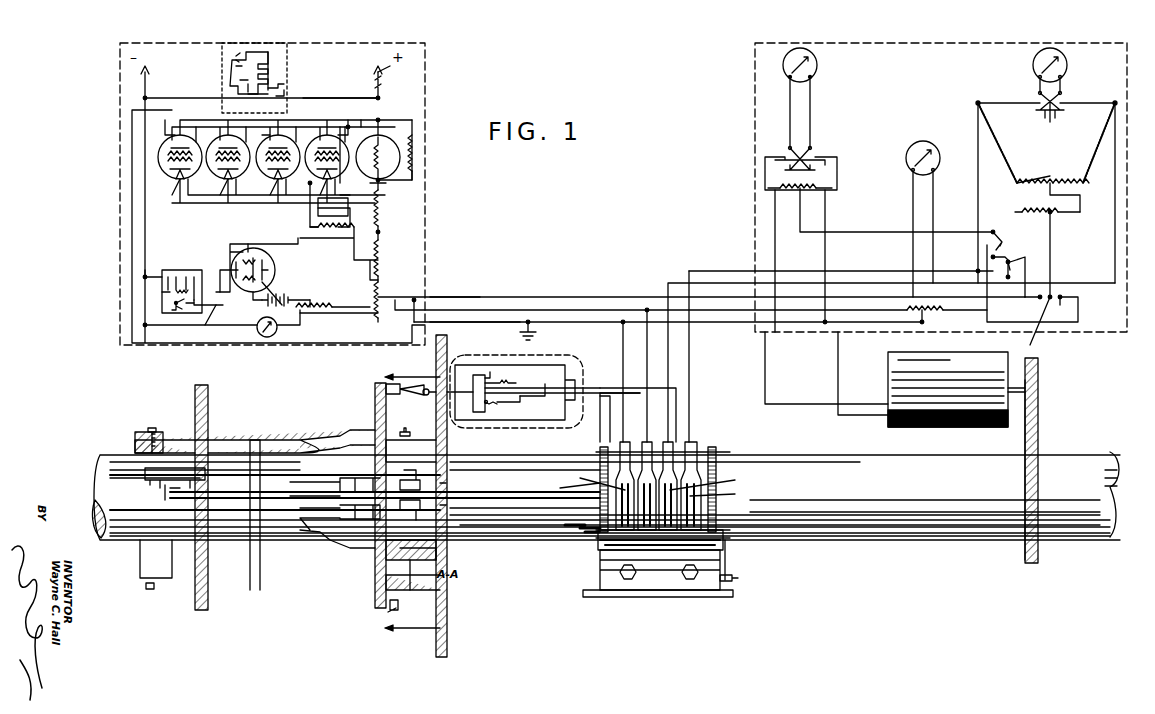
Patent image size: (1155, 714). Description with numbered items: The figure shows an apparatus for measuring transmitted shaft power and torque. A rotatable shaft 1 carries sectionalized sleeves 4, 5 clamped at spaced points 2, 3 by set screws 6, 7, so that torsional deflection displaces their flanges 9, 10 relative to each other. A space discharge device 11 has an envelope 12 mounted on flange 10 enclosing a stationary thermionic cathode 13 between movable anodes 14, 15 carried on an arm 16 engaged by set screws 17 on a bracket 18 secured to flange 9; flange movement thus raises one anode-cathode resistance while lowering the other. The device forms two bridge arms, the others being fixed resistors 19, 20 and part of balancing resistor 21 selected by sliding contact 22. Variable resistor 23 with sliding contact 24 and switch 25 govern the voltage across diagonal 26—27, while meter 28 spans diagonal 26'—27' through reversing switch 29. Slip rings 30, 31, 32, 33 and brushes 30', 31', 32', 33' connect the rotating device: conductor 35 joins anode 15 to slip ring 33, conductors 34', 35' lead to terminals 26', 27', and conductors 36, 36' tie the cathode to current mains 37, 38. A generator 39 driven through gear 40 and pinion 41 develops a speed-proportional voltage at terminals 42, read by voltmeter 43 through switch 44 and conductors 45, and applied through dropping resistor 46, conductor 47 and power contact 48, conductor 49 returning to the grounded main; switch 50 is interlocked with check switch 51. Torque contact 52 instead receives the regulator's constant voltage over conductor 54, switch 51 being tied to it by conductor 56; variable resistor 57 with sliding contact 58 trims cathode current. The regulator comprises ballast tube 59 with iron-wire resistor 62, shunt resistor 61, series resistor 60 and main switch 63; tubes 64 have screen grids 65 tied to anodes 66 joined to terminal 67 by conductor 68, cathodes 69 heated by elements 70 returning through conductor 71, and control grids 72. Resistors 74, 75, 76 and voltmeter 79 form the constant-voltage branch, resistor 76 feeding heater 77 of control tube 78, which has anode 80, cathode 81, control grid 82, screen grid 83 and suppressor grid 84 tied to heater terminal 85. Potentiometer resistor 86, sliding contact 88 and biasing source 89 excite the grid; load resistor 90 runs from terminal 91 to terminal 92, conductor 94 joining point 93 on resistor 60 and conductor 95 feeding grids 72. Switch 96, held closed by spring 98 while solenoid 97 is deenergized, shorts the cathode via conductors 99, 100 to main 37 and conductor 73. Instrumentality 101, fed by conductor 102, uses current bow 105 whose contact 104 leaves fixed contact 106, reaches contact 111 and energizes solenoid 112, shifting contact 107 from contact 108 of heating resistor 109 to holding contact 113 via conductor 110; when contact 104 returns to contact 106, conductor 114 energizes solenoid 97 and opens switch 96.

The rotatable shaft 1 is at (848, 500).
The point of securement 2 is at (132, 468).
The point of securement 3 is at (437, 578).
The sectionalized sleeve 4 is at (318, 444).
The sectionalized sleeve 5 is at (404, 440).
The set screw 6 is at (155, 428).
The set screw 7 is at (408, 432).
The flange 9 is at (375, 404).
The flange 10 is at (447, 344).
The space discharge device 11 is at (570, 362).
The envelope 12 is at (548, 364).
The thermionic cathode 13 is at (512, 386).
The anode 14 is at (486, 404).
The anode 15 is at (490, 372).
The arm 16 is at (466, 388).
The set screws 17 is at (405, 386).
The bracket 18 is at (424, 394).
The fixed resistor 19 is at (1104, 124).
The fixed resistor 20 is at (992, 124).
The variable balancing resistor 21 is at (1040, 190).
The sliding contact 22 is at (1070, 196).
The variable resistor 23 is at (1040, 218).
The sliding contact 24 is at (1052, 218).
The switch 25 is at (1035, 325).
The bridge diagonal terminal 26 is at (1053, 171).
The terminal portion 26' is at (1104, 181).
The grounded diagonal end 27 is at (513, 330).
The terminal portion 27' is at (1032, 92).
The meter 28 is at (1040, 48).
The double-pole double-throw reversing switch 29 is at (1042, 121).
The slip ring 30 is at (639, 487).
The brush 30' is at (574, 488).
The slip ring 31 is at (606, 483).
The brush 31' is at (588, 477).
The slip ring 32 is at (680, 480).
The brush 32' is at (712, 481).
The slip ring 33 is at (695, 486).
The brush 33' is at (722, 492).
The conductor 34' is at (672, 356).
The conductor 35 is at (637, 405).
The conductor 35' is at (841, 225).
The conductors 36 is at (537, 380).
The conductors 36' is at (867, 362).
The current main 37 is at (450, 297).
The current main 38 is at (482, 322).
The direct current generator 39 is at (888, 370).
The gear 40 is at (1038, 446).
The pinion 41 is at (1038, 378).
The generator terminals 42 is at (888, 406).
The voltmeter 43 is at (800, 48).
The double-pole double-throw switch 44 is at (815, 175).
The conductors 45 is at (838, 355).
The voltage dropping resistor 46 is at (790, 192).
The conductor 47 is at (866, 232).
The power contact 48 is at (1062, 298).
The conductor 49 is at (825, 252).
The switch 50 is at (997, 231).
The check switch 51 is at (1012, 268).
The torque contact 52 is at (1042, 296).
The conductor 54 is at (392, 290).
The conductor 56 is at (1020, 268).
The variable resistor 57 is at (918, 310).
The sliding contact 58 is at (924, 320).
The ballast tube 59 is at (388, 140).
The series resistor 60 is at (371, 177).
The resistor 61 is at (416, 154).
The ballast resistor 62 is at (368, 158).
The main control switch 63 is at (384, 78).
The tubes 64 is at (210, 205).
The screen grids 65 is at (196, 142).
The anodes 66 is at (178, 133).
The terminal 67 is at (380, 120).
The conductor 68 is at (366, 120).
The cathodes 69 is at (237, 181).
The heater elements 70 is at (262, 191).
The conductor 71 is at (362, 187).
The control grids 72 is at (249, 153).
The conductor 73 is at (148, 232).
The resistor 74 is at (382, 196).
The resistor 75 is at (382, 243).
The resistor 76 is at (382, 270).
The heater element 77 is at (268, 268).
The control tube 78 is at (280, 292).
The voltmeter 79 is at (221, 322).
The anode 80 is at (232, 272).
The cathode 81 is at (268, 268).
The control grid 82 is at (252, 295).
The screen grid 83 is at (248, 250).
The suppressor grid 84 is at (236, 256).
The heater terminal 85 is at (412, 300).
The high ohmic resistor 86 is at (304, 316).
The sliding contact 88 is at (314, 306).
The source of biasing voltage 89 is at (296, 309).
The load resistor 90 is at (330, 228).
The terminal 91 is at (312, 227).
The terminal 92 is at (352, 236).
The junction point 93 is at (381, 173).
The conductor 94 is at (385, 228).
The conductor 95 is at (310, 205).
The switch 96 is at (186, 300).
The solenoid 97 is at (184, 290).
The spring 98 is at (178, 310).
The conductor 99 is at (362, 334).
The conductor 100 is at (156, 275).
The instrumentality 101 is at (276, 60).
The conductor 102 is at (240, 80).
The movable contact 104 is at (280, 86).
The current bow 105 is at (278, 70).
The fixed current contact 106 is at (248, 88).
The movable solenoid contact 107 is at (240, 56).
The fixed contact 108 is at (236, 66).
The heating resistor 109 is at (268, 58).
The conductor 110 is at (250, 94).
The fixed contact 111 is at (282, 96).
The solenoid 112 is at (236, 56).
The second fixed contact 113 is at (237, 60).
The conductor 114 is at (132, 200).